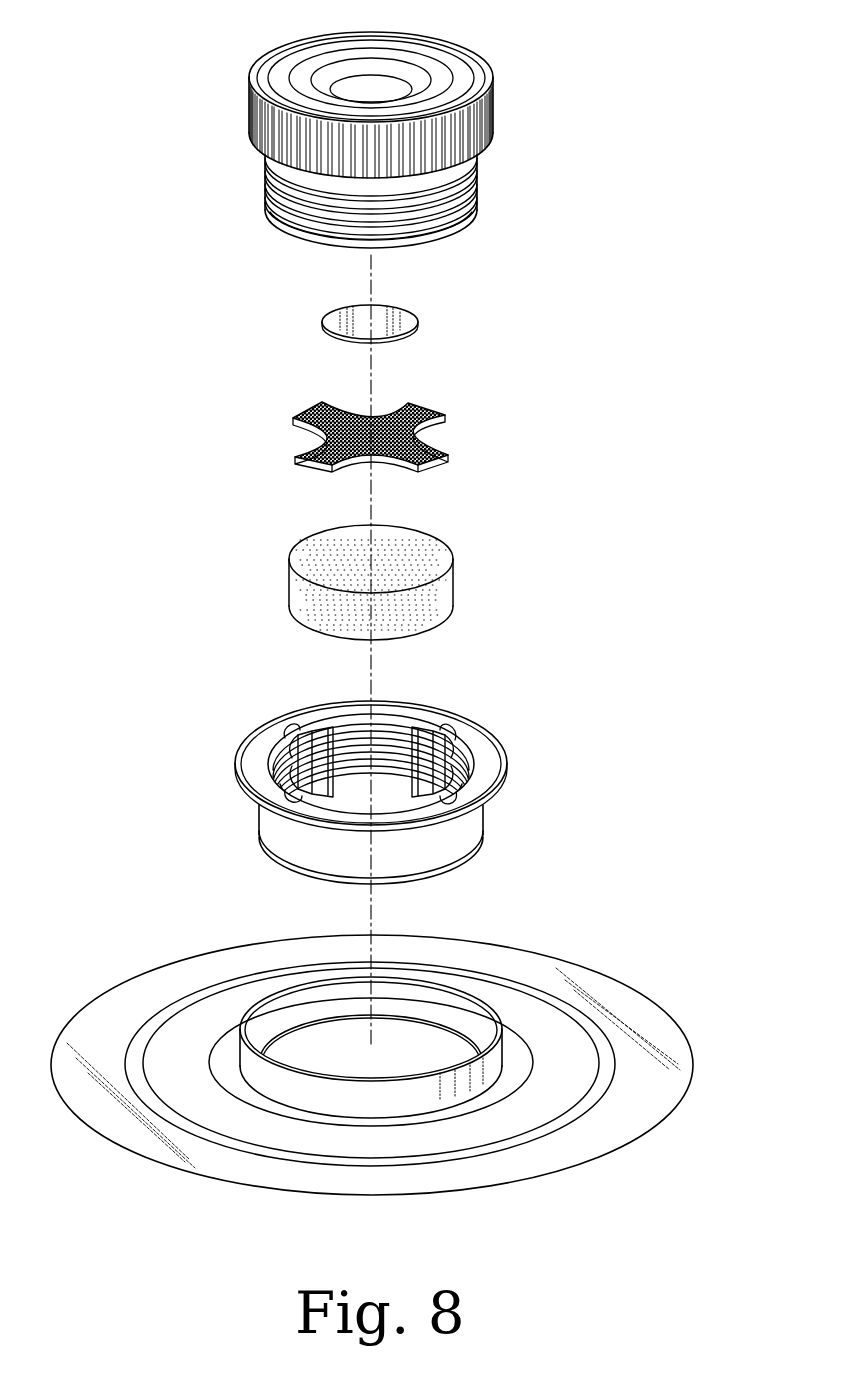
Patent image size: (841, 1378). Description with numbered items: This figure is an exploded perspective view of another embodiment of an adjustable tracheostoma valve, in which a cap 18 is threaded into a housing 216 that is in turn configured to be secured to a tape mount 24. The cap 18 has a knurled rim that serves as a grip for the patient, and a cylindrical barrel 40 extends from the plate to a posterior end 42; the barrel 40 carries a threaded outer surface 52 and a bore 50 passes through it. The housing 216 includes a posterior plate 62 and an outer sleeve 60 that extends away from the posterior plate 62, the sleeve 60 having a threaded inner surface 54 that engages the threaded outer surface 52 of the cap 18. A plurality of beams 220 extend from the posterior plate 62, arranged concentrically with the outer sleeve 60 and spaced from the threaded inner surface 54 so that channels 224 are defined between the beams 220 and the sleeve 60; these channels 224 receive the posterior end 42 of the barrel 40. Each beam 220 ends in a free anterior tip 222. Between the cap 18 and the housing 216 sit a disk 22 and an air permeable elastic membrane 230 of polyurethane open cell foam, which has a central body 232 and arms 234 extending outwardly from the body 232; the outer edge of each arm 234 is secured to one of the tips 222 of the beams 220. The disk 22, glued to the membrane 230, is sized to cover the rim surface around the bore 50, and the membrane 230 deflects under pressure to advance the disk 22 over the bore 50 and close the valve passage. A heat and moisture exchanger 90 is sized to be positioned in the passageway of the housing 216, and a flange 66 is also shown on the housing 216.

The cap 18 is at (515, 116).
The bore 50 is at (341, 68).
The threaded outer surface 52 is at (268, 170).
The barrel 40 is at (477, 198).
The posterior end 42 is at (442, 236).
The disk 22 is at (410, 322).
The air permeable elastic membrane 230 is at (462, 446).
The central body 232 is at (387, 412).
The arms 234 is at (303, 408).
The heat and moisture exchanger 90 is at (447, 558).
The housing 216 is at (541, 726).
The flange 66 is at (507, 757).
The threaded inner surface 54 is at (476, 748).
The beams 220 is at (308, 758).
The free anterior tip 222 is at (326, 722).
The channels 224 is at (292, 736).
The outer sleeve 60 is at (478, 818).
The posterior plate 62 is at (412, 877).
The tape mount 24 is at (610, 994).